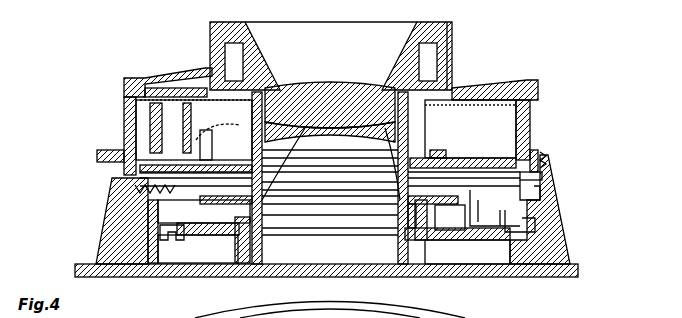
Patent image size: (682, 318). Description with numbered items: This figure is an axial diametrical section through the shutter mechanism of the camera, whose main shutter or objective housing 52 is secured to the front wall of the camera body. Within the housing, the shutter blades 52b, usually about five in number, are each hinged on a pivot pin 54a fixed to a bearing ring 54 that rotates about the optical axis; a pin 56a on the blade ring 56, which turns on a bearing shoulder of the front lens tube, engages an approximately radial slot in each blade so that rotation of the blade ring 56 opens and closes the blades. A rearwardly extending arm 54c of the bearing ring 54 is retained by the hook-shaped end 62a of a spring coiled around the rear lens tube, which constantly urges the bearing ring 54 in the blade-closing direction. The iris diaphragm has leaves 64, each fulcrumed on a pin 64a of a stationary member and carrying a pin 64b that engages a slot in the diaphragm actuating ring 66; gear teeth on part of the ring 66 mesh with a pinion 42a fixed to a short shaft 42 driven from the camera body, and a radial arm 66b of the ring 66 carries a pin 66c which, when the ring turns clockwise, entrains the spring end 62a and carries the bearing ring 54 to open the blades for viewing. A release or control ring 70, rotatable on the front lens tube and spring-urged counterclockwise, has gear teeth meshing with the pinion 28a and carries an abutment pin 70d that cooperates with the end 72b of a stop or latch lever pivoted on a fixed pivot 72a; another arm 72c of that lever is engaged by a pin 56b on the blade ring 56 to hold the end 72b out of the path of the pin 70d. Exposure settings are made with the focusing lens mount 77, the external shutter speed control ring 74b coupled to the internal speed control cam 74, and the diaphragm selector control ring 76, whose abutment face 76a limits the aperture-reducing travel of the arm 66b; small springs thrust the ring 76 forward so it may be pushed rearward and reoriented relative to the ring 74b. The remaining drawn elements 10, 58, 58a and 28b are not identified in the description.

The base plate 10 is at (567, 268).
The short shaft 42 is at (180, 239).
The pinion 42a is at (112, 190).
The shutter housing 52 is at (92, 169).
The shutter blades 52b is at (331, 150).
The bearing ring 54 is at (450, 178).
The pivot pin 54a is at (262, 200).
The rearwardly extending arm 54c is at (548, 162).
The shutter blade actuating ring 56 is at (436, 155).
The pin 56a is at (204, 217).
The pin 56b is at (273, 178).
The track 58 is at (343, 312).
The track edge 58a is at (242, 313).
The pinion 28a is at (378, 316).
The arc segment 28b is at (266, 317).
The hook-shaped end of spring 62a is at (487, 209).
The diaphragm leaves 64 is at (398, 240).
The pin 64a is at (398, 200).
The pin 64b is at (440, 230).
The diaphragm actuating ring 66 is at (477, 210).
The radial arm 66b is at (546, 189).
The pin 66c is at (538, 218).
The release ring 70 is at (465, 128).
The abutment pin 70d is at (275, 89).
The fixed pivot 72a is at (178, 100).
The end of stop lever 72b is at (195, 66).
The arm of lever 72c is at (218, 139).
The internal shutter speed control cam 74 is at (480, 92).
The external shutter speed control ring 74b is at (527, 84).
The diaphragm selector control ring 76 is at (540, 150).
The abutment face 76a is at (546, 174).
The focusing lens mount 77 is at (447, 38).